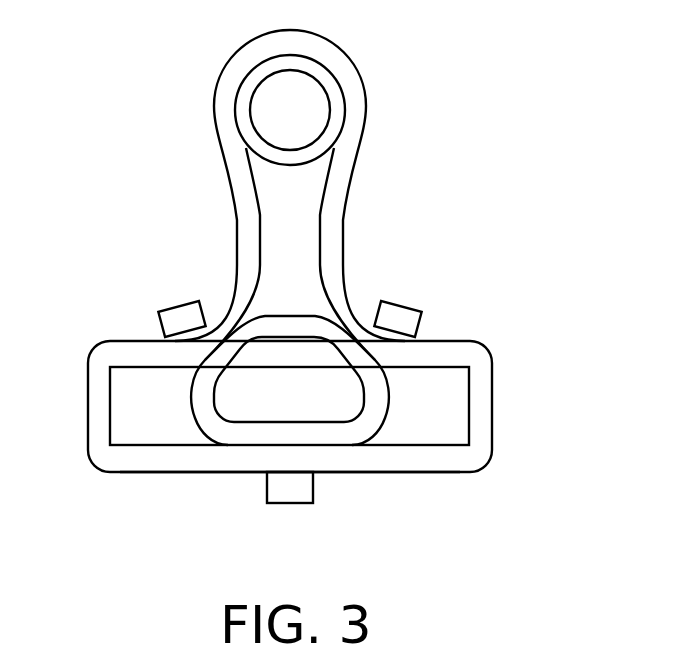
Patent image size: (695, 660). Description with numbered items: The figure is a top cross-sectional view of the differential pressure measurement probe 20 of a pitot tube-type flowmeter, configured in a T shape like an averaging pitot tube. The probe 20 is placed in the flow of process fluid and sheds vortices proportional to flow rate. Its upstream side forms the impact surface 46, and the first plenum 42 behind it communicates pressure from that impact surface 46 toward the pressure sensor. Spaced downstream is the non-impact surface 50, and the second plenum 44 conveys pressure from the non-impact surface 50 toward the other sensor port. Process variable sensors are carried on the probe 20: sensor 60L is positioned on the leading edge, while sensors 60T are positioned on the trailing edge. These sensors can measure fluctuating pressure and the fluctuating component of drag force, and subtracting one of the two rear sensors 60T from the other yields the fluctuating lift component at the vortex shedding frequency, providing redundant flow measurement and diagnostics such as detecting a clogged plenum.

The differential pressure measurement probe 20 is at (395, 208).
The first plenum 42 is at (302, 406).
The second plenum 44 is at (285, 102).
The impact surface 46 is at (393, 472).
The non-impact surface 50 is at (463, 338).
The trailing edge process variable sensors 60T is at (183, 322).
The leading edge process variable sensor 60L is at (283, 487).